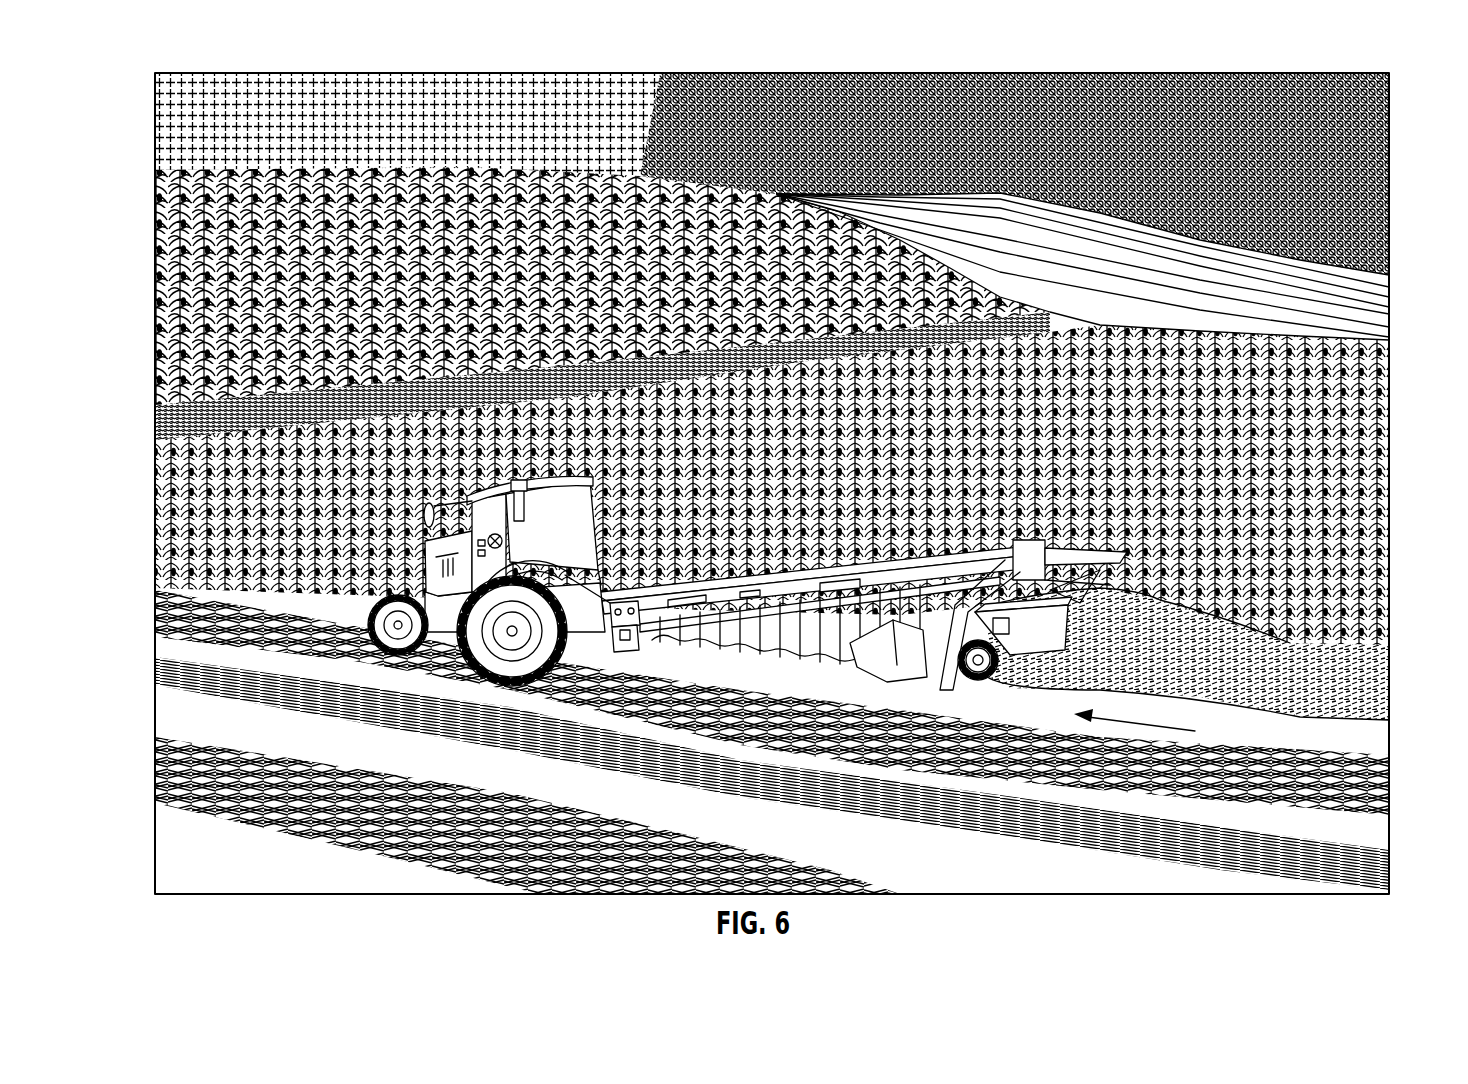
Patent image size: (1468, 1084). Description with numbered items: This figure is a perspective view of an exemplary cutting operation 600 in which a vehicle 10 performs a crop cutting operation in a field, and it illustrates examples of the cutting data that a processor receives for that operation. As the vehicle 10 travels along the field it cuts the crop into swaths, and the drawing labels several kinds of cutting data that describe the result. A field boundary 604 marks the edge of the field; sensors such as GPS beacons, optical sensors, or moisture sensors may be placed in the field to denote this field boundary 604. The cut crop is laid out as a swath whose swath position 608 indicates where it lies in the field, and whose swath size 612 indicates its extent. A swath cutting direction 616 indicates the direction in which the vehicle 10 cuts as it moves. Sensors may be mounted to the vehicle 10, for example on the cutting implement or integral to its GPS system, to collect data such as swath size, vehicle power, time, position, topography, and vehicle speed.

The vehicle 10 is at (747, 555).
The cutting operation 600 is at (152, 108).
The field boundary 604 is at (1370, 278).
The swath position 608 is at (158, 775).
The swath size 612 is at (790, 766).
The swath cutting direction 616 is at (1127, 722).